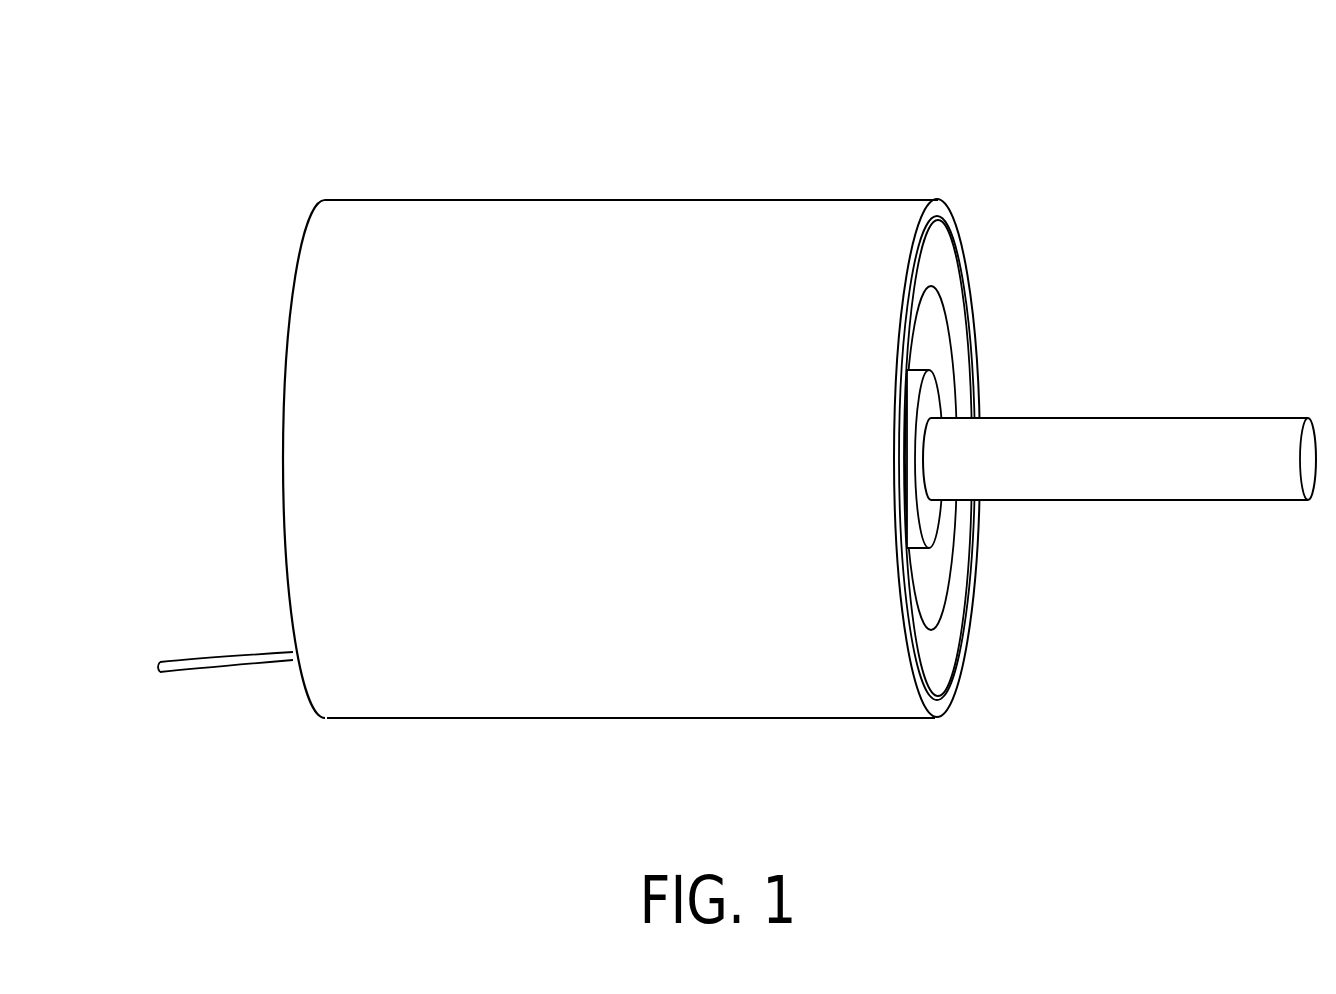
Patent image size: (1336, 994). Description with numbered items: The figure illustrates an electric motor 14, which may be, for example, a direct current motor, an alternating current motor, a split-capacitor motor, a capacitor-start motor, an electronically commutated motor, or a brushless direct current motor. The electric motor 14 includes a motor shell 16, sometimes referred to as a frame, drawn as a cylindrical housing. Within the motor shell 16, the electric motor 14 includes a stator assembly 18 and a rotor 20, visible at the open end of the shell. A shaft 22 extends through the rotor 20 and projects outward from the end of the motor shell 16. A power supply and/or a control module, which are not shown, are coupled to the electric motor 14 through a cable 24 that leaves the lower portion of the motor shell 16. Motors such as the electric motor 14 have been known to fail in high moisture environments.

The electric motor 14 is at (808, 107).
The motor shell 16 is at (514, 199).
The stator assembly 18 is at (937, 253).
The rotor 20 is at (930, 523).
The shaft 22 is at (1193, 418).
The cable 24 is at (220, 670).